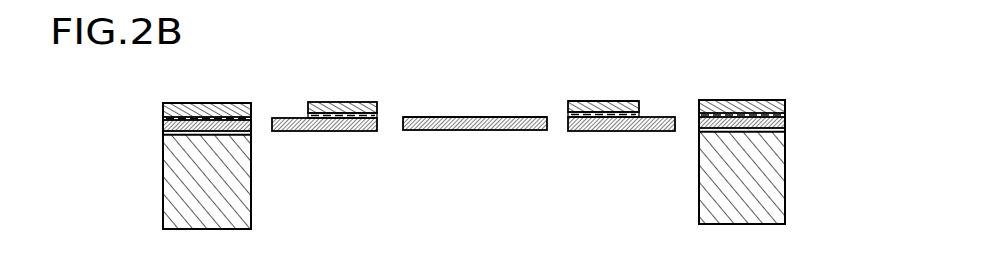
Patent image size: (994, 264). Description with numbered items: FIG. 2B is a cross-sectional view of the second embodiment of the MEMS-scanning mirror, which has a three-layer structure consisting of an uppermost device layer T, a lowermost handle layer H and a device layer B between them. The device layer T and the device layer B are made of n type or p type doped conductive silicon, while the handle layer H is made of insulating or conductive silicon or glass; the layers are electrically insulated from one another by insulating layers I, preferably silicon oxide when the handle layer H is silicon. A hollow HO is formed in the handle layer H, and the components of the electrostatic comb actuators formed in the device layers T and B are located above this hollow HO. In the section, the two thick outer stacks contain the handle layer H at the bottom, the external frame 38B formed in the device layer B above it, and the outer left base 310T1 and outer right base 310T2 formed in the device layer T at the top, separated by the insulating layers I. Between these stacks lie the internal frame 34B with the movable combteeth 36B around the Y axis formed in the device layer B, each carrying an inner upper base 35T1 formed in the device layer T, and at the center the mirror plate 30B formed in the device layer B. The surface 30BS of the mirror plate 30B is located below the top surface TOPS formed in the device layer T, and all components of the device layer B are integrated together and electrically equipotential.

The handle layer H is at (173, 212).
The insulating layers I is at (205, 156).
The device layer B is at (774, 118).
The device layer T is at (773, 100).
The outer left base 310T1 is at (201, 103).
The outer right base 310T2 is at (735, 100).
The external frame 38B is at (240, 133).
The movable combteeth around the Y axis 36B is at (283, 131).
The inner upper base 35T1 is at (338, 102).
The internal frame 34B is at (360, 131).
The top surface TOPS is at (620, 101).
The mirror plate 30B is at (465, 130).
The surface of the mirror plate 30BS is at (466, 117).
The hollow HO is at (477, 210).